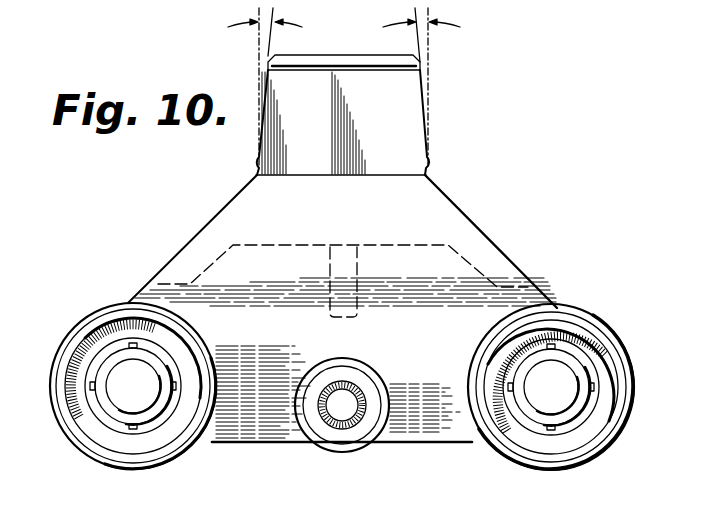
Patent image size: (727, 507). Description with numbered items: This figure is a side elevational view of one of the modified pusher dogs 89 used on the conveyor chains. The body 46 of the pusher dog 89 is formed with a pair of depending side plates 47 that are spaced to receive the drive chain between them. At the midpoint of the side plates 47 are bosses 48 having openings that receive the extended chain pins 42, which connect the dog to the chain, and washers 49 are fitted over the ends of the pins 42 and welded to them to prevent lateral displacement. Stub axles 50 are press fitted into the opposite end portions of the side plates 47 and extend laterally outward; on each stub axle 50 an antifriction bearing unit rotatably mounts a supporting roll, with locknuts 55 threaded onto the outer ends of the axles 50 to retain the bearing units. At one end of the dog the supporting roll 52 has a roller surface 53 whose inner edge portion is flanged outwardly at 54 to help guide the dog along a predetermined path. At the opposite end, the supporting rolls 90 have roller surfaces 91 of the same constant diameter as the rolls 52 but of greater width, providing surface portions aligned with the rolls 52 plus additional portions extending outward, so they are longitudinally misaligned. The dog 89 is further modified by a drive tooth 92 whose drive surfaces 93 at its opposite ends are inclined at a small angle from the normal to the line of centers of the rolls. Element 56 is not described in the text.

The extended chain pin 42 is at (337, 416).
The body 46 is at (493, 265).
The side plate 47 is at (432, 443).
The boss 48 is at (386, 440).
The washer 49 is at (348, 436).
The stub axle 50 is at (113, 395).
The supporting roll 52 is at (130, 446).
The roller surface 53 is at (72, 432).
The flange 54 is at (92, 460).
The locknut 55 is at (107, 360).
The sleeve 56 is at (93, 368).
The pusher dog 89 is at (469, 224).
The supporting roll 90 is at (597, 420).
The roller surface 91 is at (577, 325).
The drive tooth 92 is at (419, 90).
The drive surface 93 is at (262, 83).